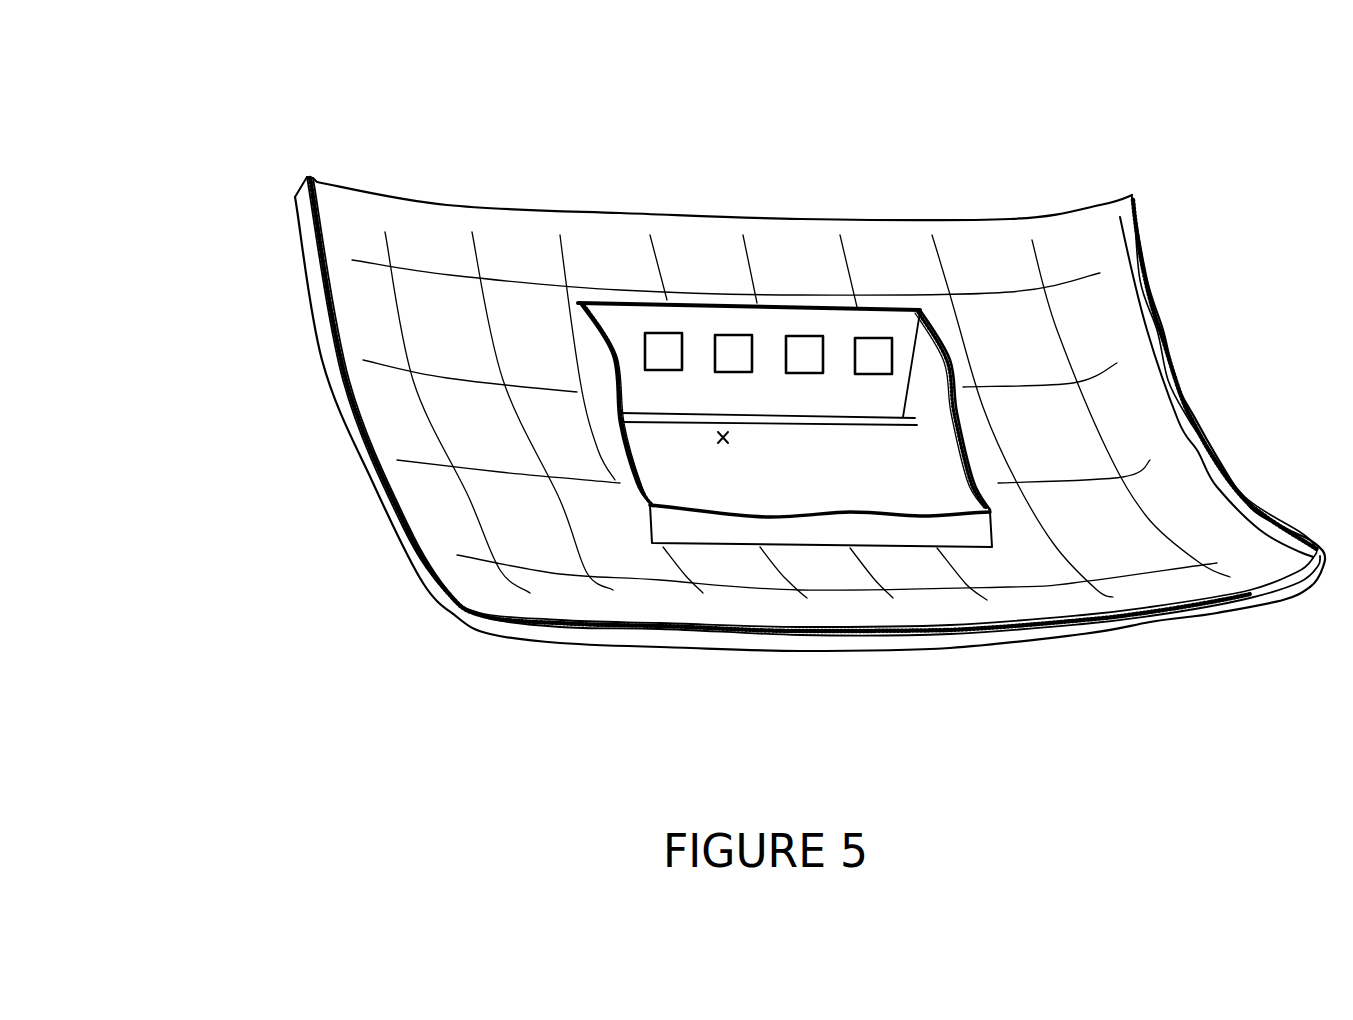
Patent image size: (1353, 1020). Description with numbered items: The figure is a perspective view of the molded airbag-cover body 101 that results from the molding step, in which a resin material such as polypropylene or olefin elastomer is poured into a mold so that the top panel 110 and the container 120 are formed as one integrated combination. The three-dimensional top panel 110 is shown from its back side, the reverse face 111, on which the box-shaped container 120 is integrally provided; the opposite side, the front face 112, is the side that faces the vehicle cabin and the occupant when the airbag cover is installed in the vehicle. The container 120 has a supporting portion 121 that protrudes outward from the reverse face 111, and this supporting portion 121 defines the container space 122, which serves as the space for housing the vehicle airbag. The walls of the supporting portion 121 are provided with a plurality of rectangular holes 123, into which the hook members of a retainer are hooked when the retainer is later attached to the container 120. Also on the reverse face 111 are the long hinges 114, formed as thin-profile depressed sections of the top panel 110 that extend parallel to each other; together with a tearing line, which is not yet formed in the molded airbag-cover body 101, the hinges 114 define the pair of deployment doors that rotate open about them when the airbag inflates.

The molded airbag-cover body 101 is at (447, 163).
The top panel 110 is at (1033, 213).
The reverse face 111 is at (347, 280).
The front face 112 is at (373, 343).
The hinges 114 is at (910, 307).
The container 120 is at (762, 426).
The supporting portion 121 is at (628, 505).
The container space 122 is at (725, 447).
The rectangular holes 123 is at (727, 335).